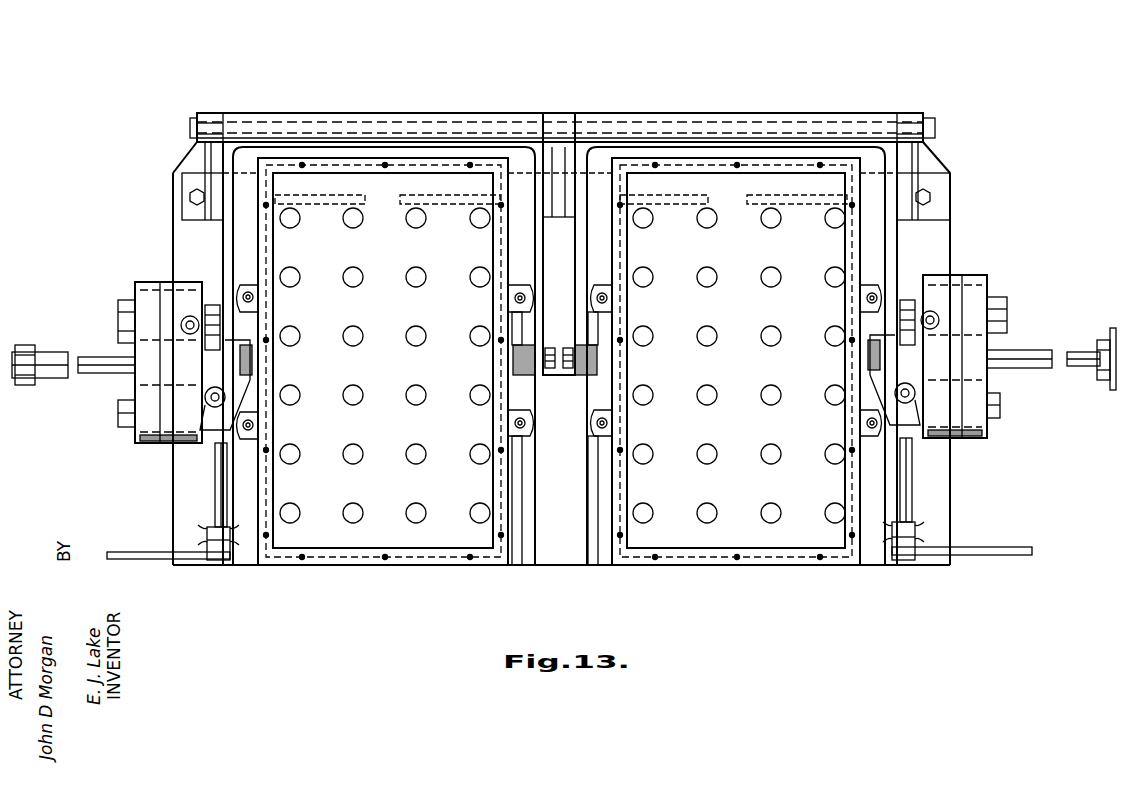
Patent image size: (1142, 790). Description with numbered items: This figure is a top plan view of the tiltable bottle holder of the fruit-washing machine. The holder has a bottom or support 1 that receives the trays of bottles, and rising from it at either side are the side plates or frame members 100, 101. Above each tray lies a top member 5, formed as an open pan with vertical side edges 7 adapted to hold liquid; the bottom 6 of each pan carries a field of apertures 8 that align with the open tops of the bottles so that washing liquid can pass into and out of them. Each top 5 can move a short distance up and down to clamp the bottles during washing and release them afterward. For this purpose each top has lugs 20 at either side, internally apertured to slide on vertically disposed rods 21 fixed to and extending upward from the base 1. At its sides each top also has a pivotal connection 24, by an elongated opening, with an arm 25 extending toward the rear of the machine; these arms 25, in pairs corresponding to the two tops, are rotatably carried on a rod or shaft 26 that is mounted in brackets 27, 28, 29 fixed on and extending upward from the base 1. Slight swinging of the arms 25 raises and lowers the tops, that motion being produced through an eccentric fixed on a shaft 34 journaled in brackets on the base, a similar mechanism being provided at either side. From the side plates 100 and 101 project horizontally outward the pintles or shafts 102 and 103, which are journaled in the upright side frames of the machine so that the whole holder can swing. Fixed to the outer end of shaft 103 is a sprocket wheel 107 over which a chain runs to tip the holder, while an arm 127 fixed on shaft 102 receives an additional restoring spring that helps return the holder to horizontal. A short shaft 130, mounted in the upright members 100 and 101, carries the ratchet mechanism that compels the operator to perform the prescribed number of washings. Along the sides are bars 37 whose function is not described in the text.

The bottom or support 1 is at (556, 567).
The top member 5 is at (337, 572).
The bottom of pan 6 is at (443, 527).
The vertical side edges 7 is at (700, 570).
The apertures 8 is at (414, 402).
The lugs 20 is at (245, 292).
The vertically-disposed rods 21 is at (524, 432).
The pivotal connection 24 is at (547, 372).
The arm 25 is at (222, 232).
The rod or shaft 26 is at (935, 128).
The bracket 27 is at (205, 116).
The bracket 28 is at (570, 113).
The bracket 29 is at (905, 113).
The shaft 34 is at (214, 487).
The lever bar 37 is at (148, 559).
The side plate or frame member 100 is at (165, 443).
The side plate or frame member 101 is at (950, 285).
The pintle or shaft 102 is at (85, 355).
The pintle or shaft 103 is at (1030, 352).
The sprocket wheel 107 is at (1110, 386).
The arm 127 is at (30, 379).
The short shaft 130 is at (117, 320).